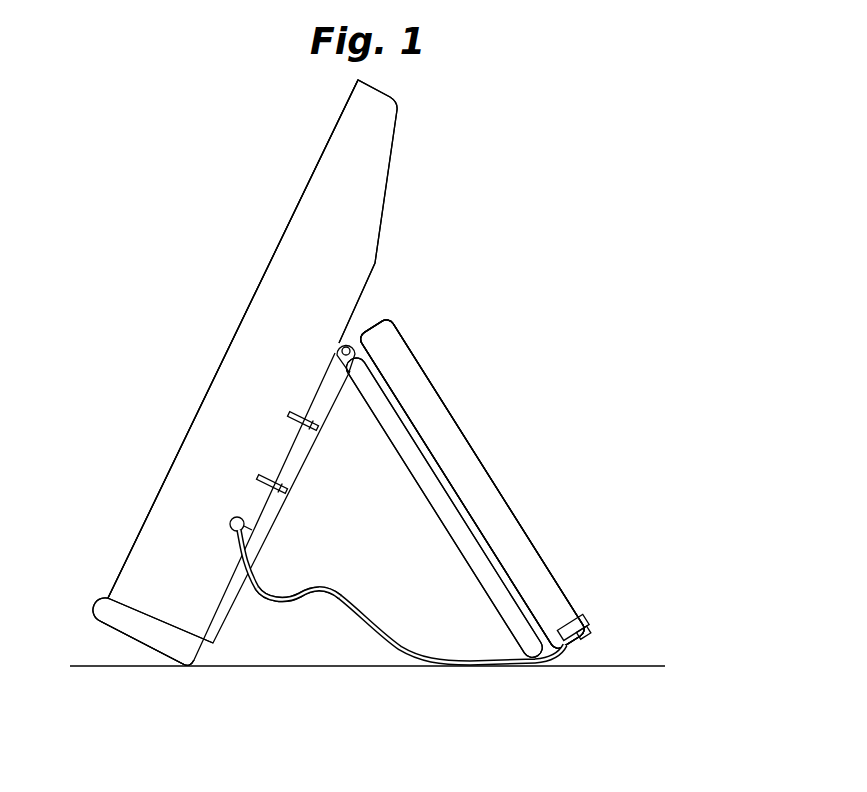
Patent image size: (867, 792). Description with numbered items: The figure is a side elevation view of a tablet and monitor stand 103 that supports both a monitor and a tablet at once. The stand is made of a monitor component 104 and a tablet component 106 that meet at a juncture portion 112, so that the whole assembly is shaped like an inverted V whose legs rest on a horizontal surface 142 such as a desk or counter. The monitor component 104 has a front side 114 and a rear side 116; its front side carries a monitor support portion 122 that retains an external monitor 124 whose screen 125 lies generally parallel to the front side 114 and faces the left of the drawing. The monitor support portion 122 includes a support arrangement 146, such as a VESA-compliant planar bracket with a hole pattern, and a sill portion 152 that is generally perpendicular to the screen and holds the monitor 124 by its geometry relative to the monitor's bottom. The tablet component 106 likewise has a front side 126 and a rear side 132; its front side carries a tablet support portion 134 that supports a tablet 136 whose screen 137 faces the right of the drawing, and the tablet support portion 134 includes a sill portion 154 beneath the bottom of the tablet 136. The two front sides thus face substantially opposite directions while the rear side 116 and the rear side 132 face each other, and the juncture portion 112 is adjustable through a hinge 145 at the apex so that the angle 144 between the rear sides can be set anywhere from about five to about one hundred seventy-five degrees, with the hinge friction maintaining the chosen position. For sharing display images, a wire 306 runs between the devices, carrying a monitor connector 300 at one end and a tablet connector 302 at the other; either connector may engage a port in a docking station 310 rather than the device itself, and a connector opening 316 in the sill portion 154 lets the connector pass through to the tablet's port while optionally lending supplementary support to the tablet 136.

The tablet and monitor stand 103 is at (459, 119).
The monitor component 104 is at (234, 652).
The tablet component 106 is at (468, 648).
The juncture portion 112 is at (345, 398).
The front side 114 is at (317, 389).
The rear side 116 is at (265, 536).
The monitor support portion 122 is at (250, 456).
The external monitor 124 is at (338, 118).
The screen 125 is at (247, 310).
The front side 126 is at (403, 420).
The rear side 132 is at (476, 574).
The tablet support portion 134 is at (480, 487).
The tablet 136 is at (422, 358).
The screen 137 is at (518, 516).
The horizontal surface 142 is at (642, 665).
The angle 144 is at (303, 473).
The hinge 145 is at (352, 340).
The support arrangement 146 is at (265, 446).
The sill portion 152 is at (130, 611).
The sill portion 154 is at (550, 656).
The monitor connector 300 is at (230, 522).
The tablet connector 302 is at (582, 622).
The wire 306 is at (330, 616).
The docking station 310 is at (592, 614).
The connector opening 316 is at (592, 652).